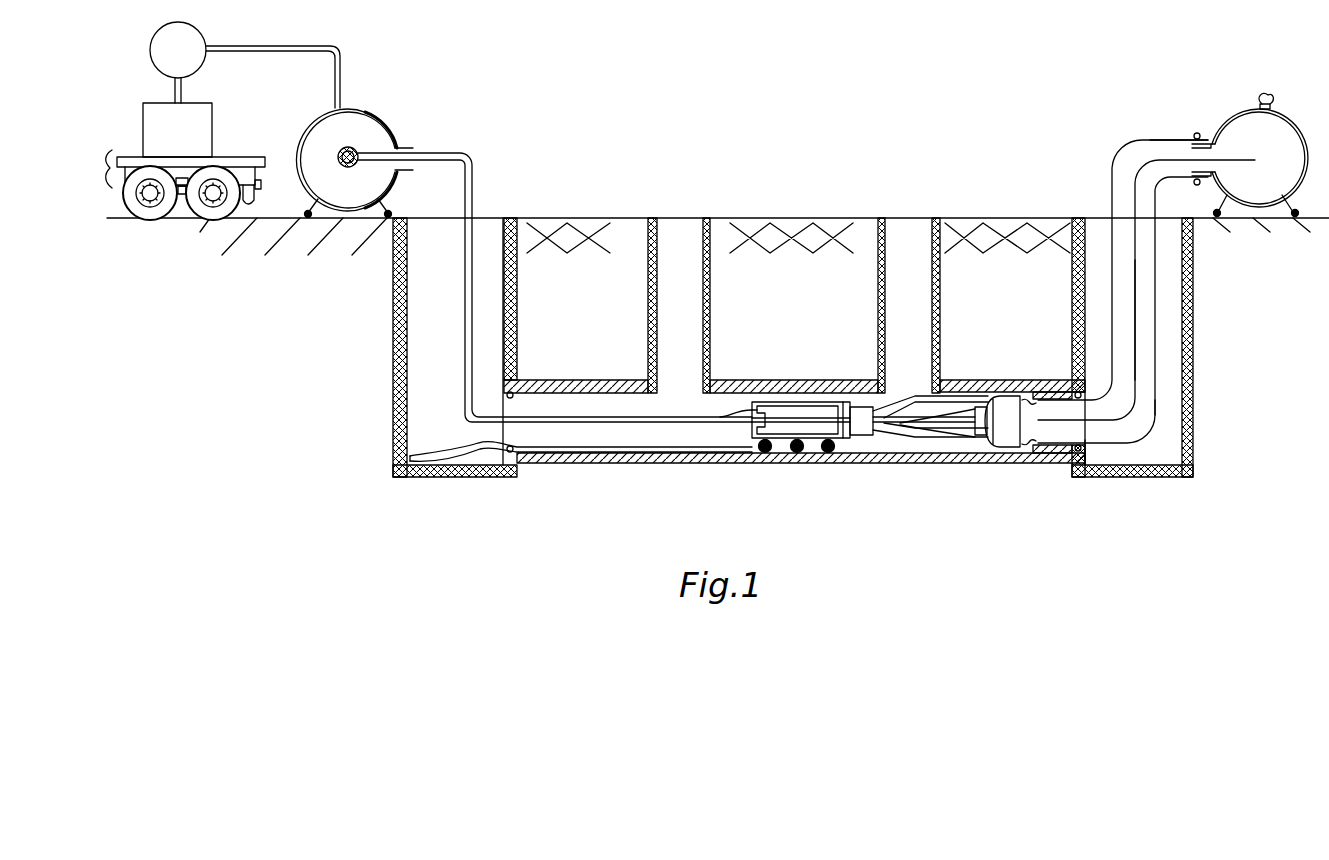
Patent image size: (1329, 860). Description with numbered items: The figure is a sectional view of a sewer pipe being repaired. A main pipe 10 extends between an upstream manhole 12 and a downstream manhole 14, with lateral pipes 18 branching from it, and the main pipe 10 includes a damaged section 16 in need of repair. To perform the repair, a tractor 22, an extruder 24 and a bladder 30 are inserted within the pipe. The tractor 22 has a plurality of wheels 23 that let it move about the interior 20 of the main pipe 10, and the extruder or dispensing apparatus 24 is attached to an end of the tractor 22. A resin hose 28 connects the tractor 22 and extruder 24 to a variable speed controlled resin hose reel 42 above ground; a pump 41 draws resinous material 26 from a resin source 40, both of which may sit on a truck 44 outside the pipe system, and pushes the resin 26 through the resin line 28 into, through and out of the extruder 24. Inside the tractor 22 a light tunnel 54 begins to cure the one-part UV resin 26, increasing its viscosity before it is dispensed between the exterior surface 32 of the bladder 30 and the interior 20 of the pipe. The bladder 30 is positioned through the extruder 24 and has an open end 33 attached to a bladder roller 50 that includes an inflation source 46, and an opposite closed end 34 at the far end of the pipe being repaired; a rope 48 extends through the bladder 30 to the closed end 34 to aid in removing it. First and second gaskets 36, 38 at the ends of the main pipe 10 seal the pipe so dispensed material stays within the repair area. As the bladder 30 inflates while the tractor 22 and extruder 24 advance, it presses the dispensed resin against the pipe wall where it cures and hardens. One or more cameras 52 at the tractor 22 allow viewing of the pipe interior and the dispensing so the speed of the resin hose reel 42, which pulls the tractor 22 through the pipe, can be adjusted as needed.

The main pipe 10 is at (1065, 378).
The upstream manhole 12 is at (1072, 312).
The downstream manhole 14 is at (518, 296).
The damaged section 16 is at (1000, 380).
The lateral pipes 18 is at (648, 306).
The interior of the main pipe 20 is at (640, 393).
The tractor 22 is at (794, 401).
The wheels 23 is at (762, 455).
The extruder 24 is at (905, 395).
The resinous material 26 is at (1030, 465).
The resin hose 28 is at (488, 426).
The bladder 30 is at (1106, 182).
The exterior surface of the bladder 32 is at (1134, 450).
The open end 33 is at (1202, 133).
The closed end 34 is at (392, 456).
The first gasket 36 is at (1083, 467).
The second gasket 38 is at (522, 454).
The resin source 40 is at (187, 102).
The pump 41 is at (190, 24).
The resin hose reel 42 is at (358, 112).
The truck 44 is at (252, 156).
The inflation source 46 is at (1272, 96).
The rope 48 is at (1134, 308).
The bladder roller 50 is at (1242, 112).
The cameras 52 is at (851, 404).
The light tunnel 54 is at (813, 432).